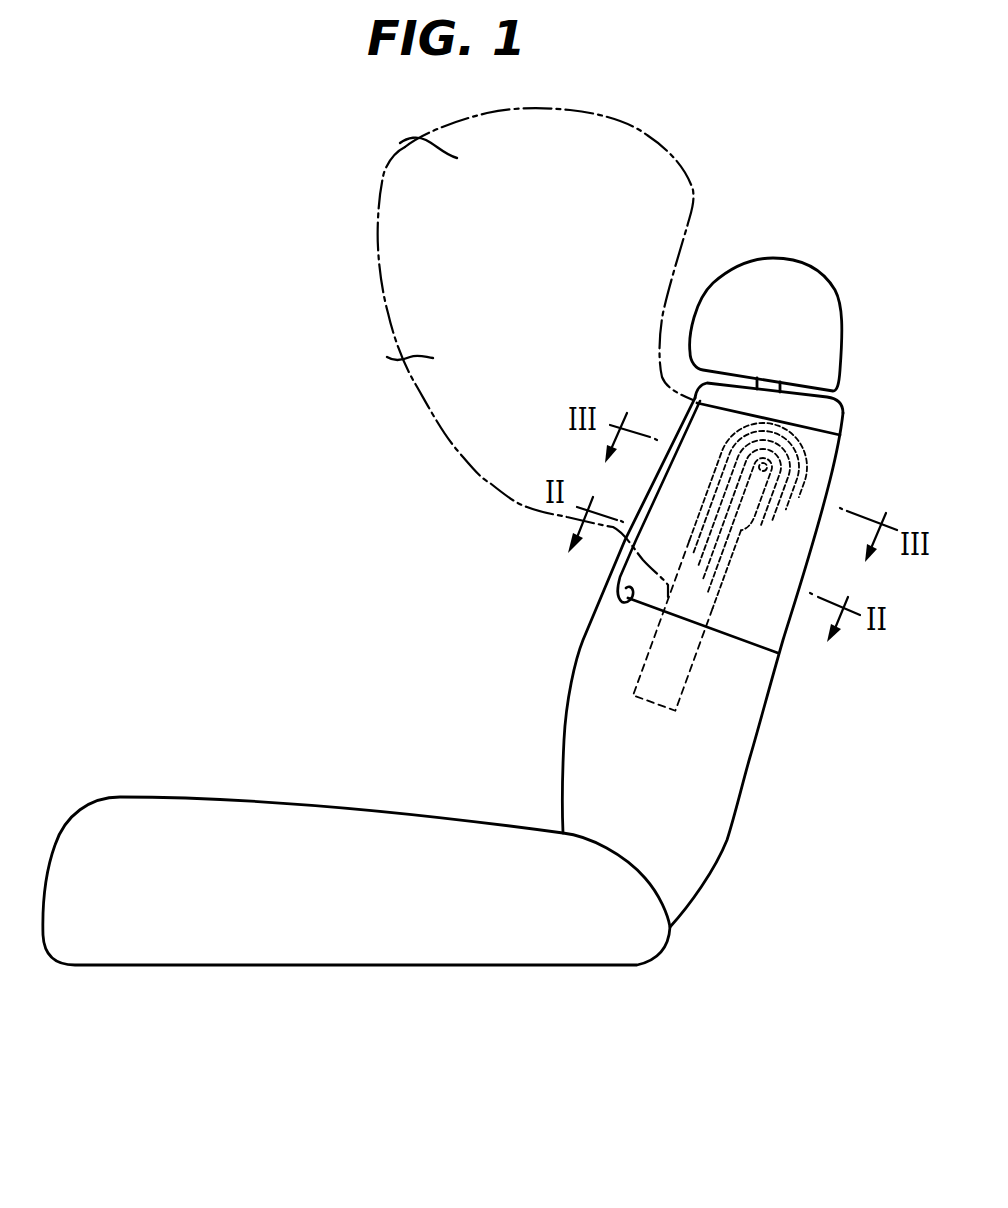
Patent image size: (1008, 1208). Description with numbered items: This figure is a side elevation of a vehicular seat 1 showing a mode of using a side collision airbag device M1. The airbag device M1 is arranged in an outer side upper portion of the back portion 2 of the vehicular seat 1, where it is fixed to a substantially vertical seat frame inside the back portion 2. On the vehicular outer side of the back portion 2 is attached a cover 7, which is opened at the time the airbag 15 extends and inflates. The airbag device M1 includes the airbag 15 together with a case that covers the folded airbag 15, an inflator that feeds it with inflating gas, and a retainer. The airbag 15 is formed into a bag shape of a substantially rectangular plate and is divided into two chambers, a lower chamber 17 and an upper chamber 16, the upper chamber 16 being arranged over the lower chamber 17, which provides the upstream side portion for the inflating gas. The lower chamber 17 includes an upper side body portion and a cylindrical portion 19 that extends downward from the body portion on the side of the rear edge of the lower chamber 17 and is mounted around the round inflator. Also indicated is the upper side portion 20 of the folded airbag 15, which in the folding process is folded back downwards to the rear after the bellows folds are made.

The vehicular seat 1 is at (243, 988).
The back portion 2 is at (690, 813).
The cover 7 is at (627, 603).
The airbag 15 is at (303, 160).
The upper chamber 16 is at (405, 147).
The lower chamber 17 is at (395, 358).
The cylindrical portion 19 is at (697, 652).
The upper side portion 20 is at (810, 473).
The airbag device M1 is at (610, 692).